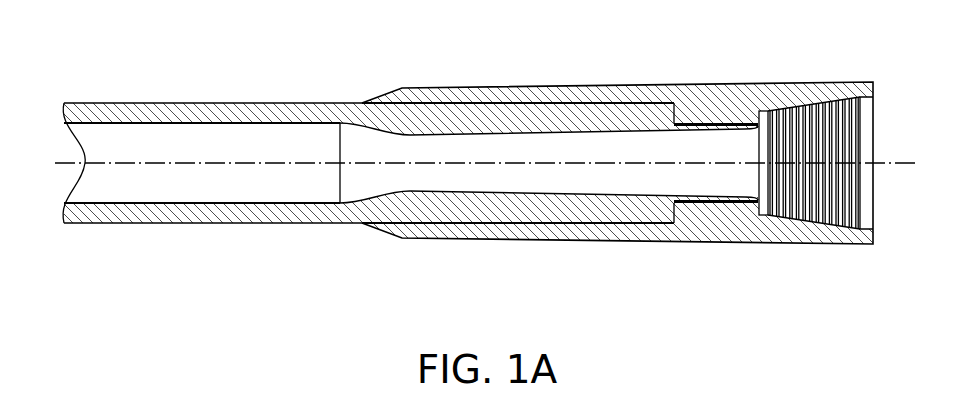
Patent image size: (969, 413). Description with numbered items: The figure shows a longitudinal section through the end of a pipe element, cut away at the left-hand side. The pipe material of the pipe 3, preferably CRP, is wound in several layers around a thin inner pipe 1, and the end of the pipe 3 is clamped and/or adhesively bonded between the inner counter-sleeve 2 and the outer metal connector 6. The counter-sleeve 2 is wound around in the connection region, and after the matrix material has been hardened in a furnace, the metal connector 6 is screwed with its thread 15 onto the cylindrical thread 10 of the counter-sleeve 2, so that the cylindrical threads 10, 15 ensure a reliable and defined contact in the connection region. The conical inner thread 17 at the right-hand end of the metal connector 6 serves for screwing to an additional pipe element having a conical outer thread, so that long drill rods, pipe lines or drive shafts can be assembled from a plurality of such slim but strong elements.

The inner pipe 1 is at (229, 205).
The counter-sleeve 2 is at (448, 132).
The pipe 3 is at (237, 108).
The metal connector 6 is at (697, 101).
The cylindrical thread 10 is at (712, 207).
The cylindrical thread 15 is at (700, 223).
The conical inner thread 17 is at (812, 224).